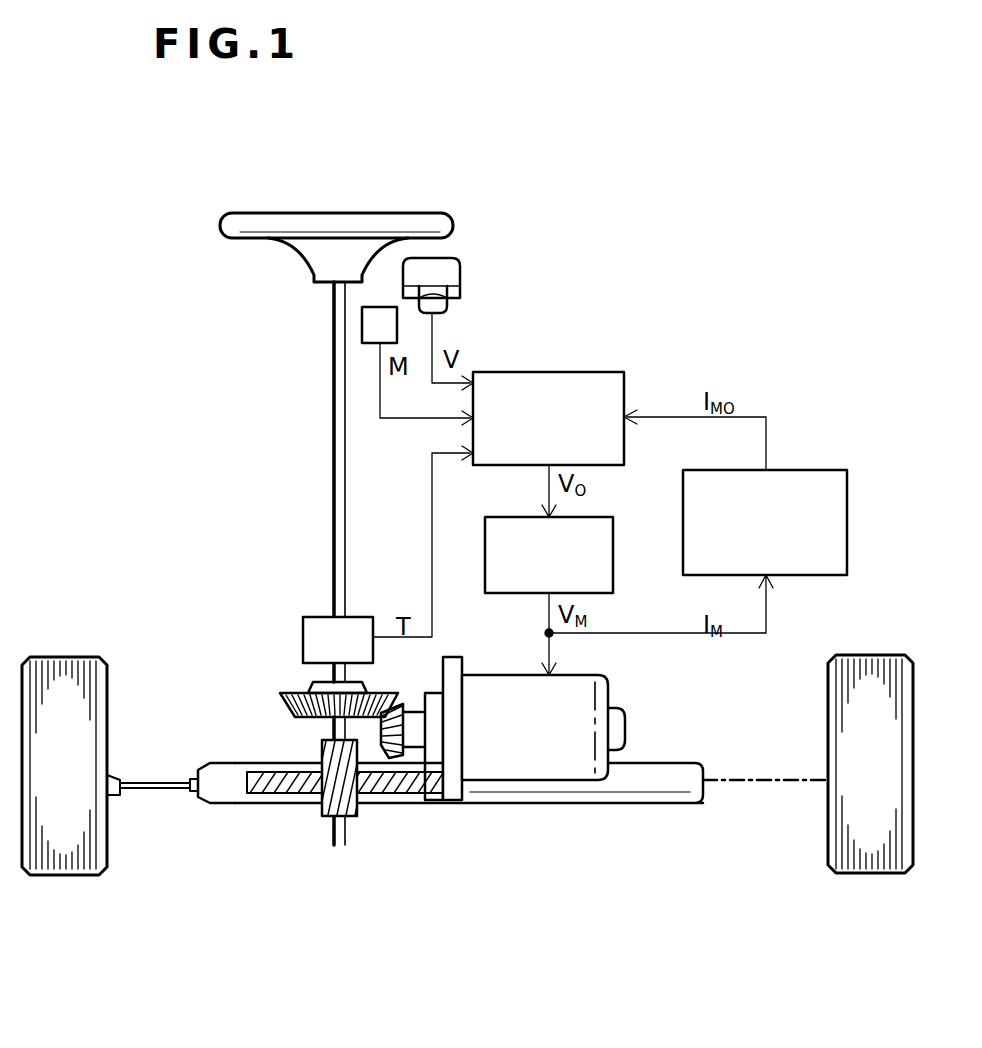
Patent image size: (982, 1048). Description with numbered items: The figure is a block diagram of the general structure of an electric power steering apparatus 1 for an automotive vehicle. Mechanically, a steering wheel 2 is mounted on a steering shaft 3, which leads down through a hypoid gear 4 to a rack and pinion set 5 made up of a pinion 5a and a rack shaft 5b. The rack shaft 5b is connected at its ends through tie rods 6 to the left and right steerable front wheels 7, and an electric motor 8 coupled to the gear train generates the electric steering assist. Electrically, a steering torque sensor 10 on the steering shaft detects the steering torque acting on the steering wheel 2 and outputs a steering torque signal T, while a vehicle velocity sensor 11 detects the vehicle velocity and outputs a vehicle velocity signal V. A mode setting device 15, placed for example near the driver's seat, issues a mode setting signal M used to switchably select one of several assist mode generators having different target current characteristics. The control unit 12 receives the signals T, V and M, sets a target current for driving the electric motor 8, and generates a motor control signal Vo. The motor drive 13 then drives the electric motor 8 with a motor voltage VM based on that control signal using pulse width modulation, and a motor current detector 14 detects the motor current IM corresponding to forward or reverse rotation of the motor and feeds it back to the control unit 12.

The electric power steering apparatus 1 is at (404, 145).
The steering wheel 2 is at (408, 213).
The steering shaft 3 is at (332, 425).
The hypoid gear 4 is at (382, 750).
The rack and pinion set 5 is at (450, 868).
The pinion 5a is at (358, 813).
The rack shaft 5b is at (653, 780).
The tie rods 6 is at (165, 790).
The steerable front wheels 7 is at (58, 658).
The electric motor 8 is at (608, 690).
The steering torque sensor 10 is at (303, 630).
The vehicle velocity sensor 11 is at (433, 268).
The control unit 12 is at (555, 372).
The motor drive 13 is at (580, 517).
The motor current detector 14 is at (790, 470).
The mode setting device 15 is at (397, 325).